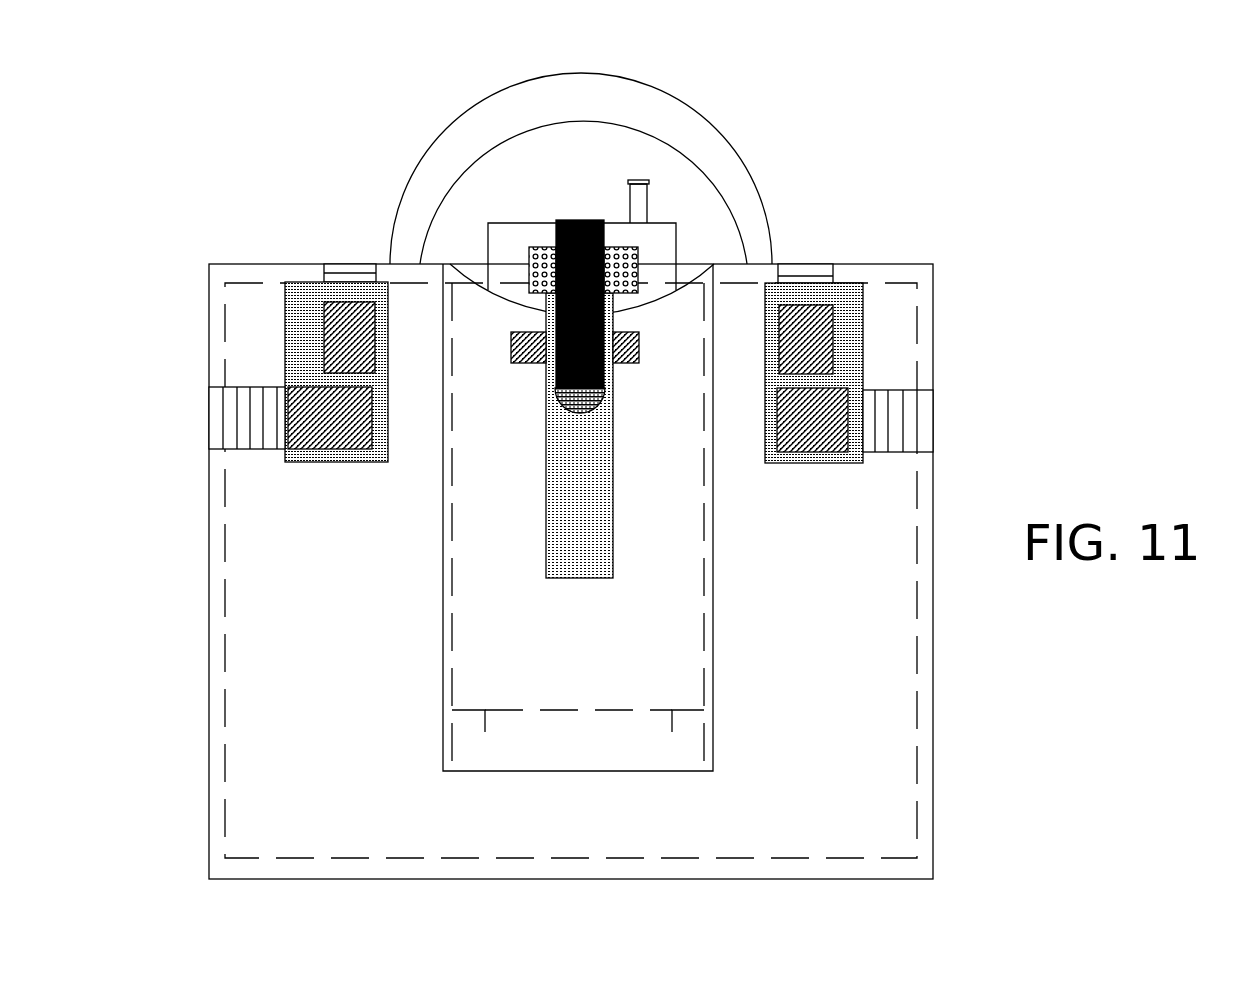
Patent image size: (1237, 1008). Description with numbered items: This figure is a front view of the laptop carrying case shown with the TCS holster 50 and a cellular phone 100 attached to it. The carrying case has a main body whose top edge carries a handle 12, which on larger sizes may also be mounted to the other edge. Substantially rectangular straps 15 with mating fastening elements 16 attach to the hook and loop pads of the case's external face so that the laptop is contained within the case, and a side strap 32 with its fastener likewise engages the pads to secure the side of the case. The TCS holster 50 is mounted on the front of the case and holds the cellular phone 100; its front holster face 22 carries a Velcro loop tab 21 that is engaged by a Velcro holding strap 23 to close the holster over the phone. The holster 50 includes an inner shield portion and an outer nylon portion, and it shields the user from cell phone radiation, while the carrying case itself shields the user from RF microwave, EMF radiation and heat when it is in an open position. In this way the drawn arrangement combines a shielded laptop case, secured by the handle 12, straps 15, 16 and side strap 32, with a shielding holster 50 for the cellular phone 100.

The cellular phone 100 is at (655, 242).
The handle 12 is at (755, 230).
The holding strap 23 is at (577, 220).
The straps 15 is at (807, 274).
The mating fastening elements 16 is at (843, 367).
The side strap 32 is at (907, 427).
The loop tab 21 is at (630, 363).
The front holster face 22 is at (673, 618).
The TCS holster 50 is at (733, 672).